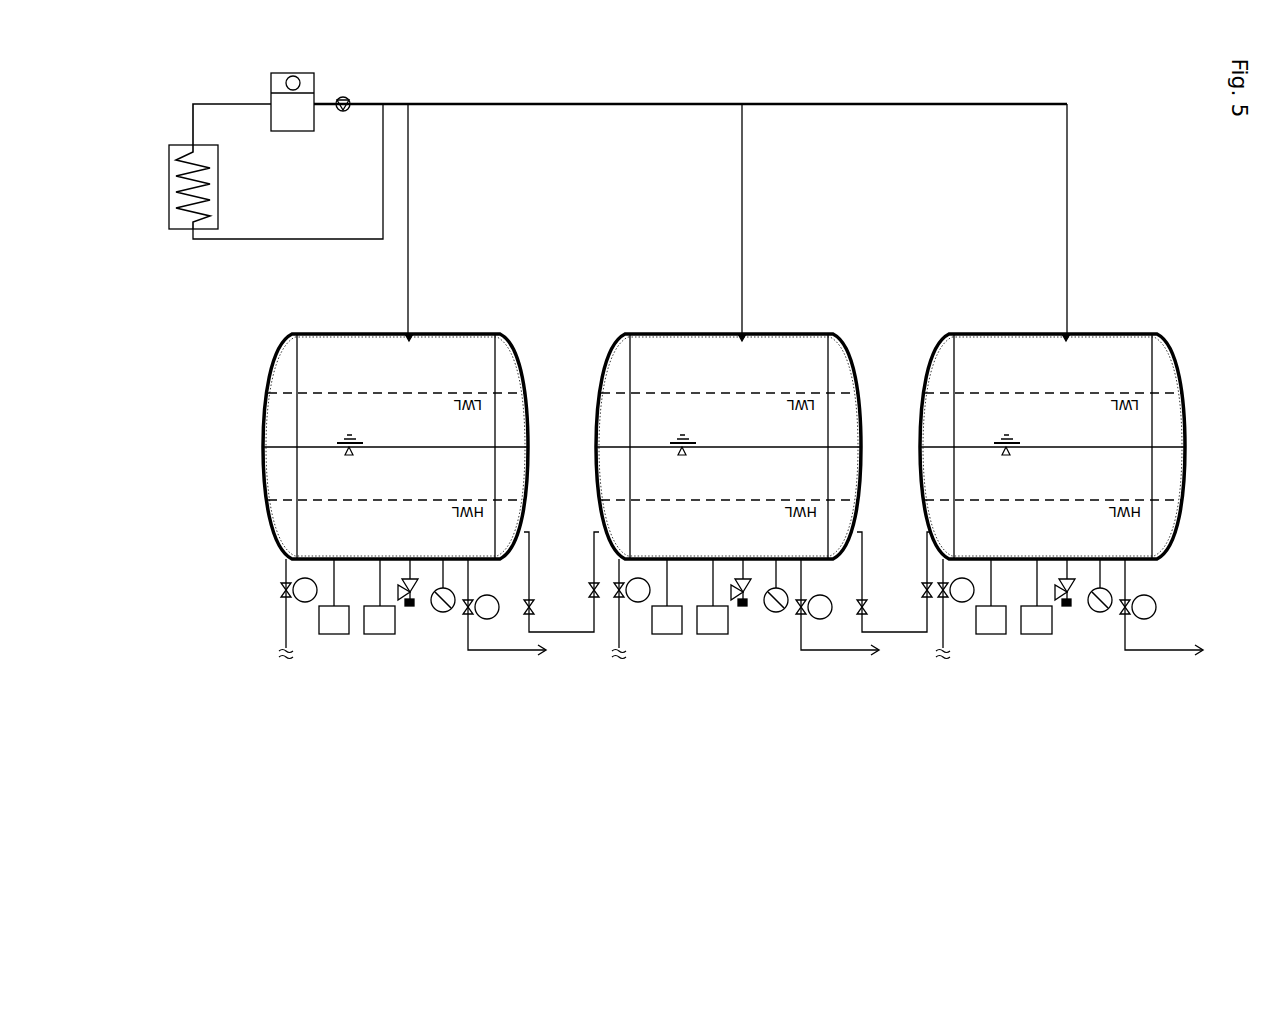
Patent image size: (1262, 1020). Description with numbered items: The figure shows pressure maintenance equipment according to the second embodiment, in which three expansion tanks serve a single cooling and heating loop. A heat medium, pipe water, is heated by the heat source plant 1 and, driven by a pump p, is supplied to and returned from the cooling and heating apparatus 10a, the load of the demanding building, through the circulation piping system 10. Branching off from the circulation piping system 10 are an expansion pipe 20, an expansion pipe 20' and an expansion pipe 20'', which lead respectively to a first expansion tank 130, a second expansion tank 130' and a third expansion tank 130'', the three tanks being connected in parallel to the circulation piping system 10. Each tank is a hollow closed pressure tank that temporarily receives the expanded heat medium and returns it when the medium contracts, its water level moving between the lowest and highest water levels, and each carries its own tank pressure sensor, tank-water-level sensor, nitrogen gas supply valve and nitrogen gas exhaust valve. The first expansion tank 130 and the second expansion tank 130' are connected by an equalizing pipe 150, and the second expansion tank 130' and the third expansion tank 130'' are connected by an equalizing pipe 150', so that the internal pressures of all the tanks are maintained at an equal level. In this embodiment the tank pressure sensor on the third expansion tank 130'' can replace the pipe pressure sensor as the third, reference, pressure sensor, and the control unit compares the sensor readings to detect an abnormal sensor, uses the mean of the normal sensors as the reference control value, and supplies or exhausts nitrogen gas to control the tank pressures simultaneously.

The heat source plant 1 is at (271, 86).
The pump p is at (340, 97).
The circulation piping system 10 is at (358, 240).
The cooling and heating apparatus 10a is at (176, 230).
The expansion pipe 20 is at (690, 219).
The expansion pipe 20' is at (669, 219).
The expansion pipe 20'' is at (1000, 219).
The first expansion tank 130 is at (382, 496).
The second expansion tank 130' is at (709, 496).
The third expansion tank 130'' is at (1032, 496).
The equalizing pipe 150 is at (561, 582).
The equalizing pipe 150' is at (894, 582).